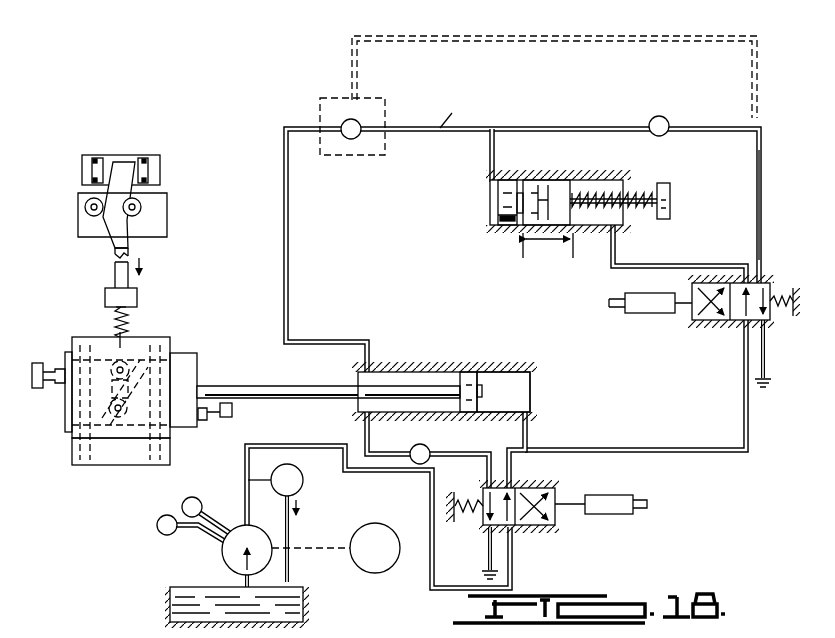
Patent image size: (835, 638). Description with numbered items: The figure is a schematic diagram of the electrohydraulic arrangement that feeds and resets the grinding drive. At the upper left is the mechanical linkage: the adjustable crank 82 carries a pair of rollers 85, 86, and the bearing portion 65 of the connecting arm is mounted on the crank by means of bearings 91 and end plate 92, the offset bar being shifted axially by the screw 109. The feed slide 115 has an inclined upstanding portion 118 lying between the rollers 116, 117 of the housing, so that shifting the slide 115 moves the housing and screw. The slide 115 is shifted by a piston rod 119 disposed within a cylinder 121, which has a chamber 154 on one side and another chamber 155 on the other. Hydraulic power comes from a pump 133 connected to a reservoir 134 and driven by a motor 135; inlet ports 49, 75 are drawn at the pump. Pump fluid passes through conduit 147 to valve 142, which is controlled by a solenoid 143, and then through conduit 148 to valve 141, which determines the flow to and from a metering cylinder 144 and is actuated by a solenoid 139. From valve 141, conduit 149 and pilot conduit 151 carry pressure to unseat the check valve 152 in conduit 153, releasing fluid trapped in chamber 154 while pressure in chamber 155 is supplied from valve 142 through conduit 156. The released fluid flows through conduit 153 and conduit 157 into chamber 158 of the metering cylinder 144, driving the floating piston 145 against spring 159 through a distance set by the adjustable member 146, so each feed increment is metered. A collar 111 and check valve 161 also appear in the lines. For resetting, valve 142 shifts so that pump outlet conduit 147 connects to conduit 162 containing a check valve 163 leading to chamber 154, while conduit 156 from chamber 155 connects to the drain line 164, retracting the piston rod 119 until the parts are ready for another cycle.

The inlet port 49 is at (157, 527).
The bearing portion 65 is at (162, 170).
The inlet port 75 is at (201, 498).
The adjustable crank 82 is at (168, 215).
The roller 85 is at (141, 208).
The roller 86 is at (86, 212).
The bearings 91 is at (155, 144).
The end plate 92 is at (117, 252).
The screw 109 is at (108, 320).
The collar 111 is at (138, 297).
The slide 115 is at (198, 372).
The roller 116 is at (133, 322).
The roller 117 is at (118, 460).
The inclined upstanding portion 118 is at (172, 358).
The piston rod 119 is at (425, 370).
The cylinder 121 is at (490, 368).
The pump 133 is at (222, 553).
The reservoir 134 is at (300, 618).
The motor 135 is at (372, 570).
The solenoid 139 is at (634, 298).
The valve 141 is at (695, 324).
The valve 142 is at (520, 528).
The solenoid 143 is at (608, 495).
The metering cylinder 144 is at (533, 176).
The floating piston 145 is at (522, 232).
The adjustable member 146 is at (643, 192).
The conduit 147 is at (368, 476).
The conduit 148 is at (640, 450).
The conduit 149 is at (757, 183).
The pilot conduit 151 is at (703, 28).
The check valve 152 is at (350, 141).
The conduit 153 is at (37, 360).
The chamber 154 is at (240, 406).
The chamber 155 is at (520, 390).
The conduit 156 is at (538, 448).
The conduit 157 is at (489, 140).
The chamber 158 is at (495, 216).
The spring 159 is at (592, 185).
The check valve 161 is at (667, 118).
The conduit 162 is at (474, 455).
The check valve 163 is at (411, 448).
The drain line 164 is at (487, 555).